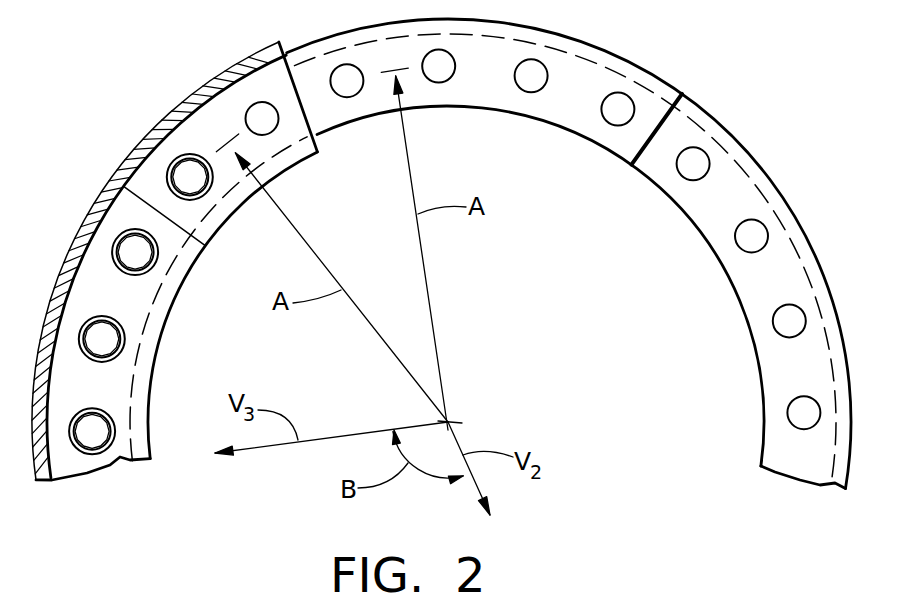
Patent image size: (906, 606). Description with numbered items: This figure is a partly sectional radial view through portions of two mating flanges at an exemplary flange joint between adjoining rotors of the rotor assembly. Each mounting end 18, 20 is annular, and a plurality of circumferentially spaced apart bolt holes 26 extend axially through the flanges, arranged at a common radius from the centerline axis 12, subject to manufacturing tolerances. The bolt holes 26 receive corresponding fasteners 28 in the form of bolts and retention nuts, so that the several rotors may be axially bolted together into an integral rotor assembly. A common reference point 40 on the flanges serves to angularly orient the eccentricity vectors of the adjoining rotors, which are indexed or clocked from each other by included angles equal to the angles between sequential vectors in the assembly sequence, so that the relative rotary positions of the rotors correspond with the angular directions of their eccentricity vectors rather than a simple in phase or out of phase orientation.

The centerline axis 12 is at (453, 419).
The mounting end 18 is at (120, 455).
The mounting end 20 is at (773, 365).
The bolt holes 26 is at (273, 117).
The fasteners 28 is at (108, 342).
The common reference point 40 is at (652, 146).